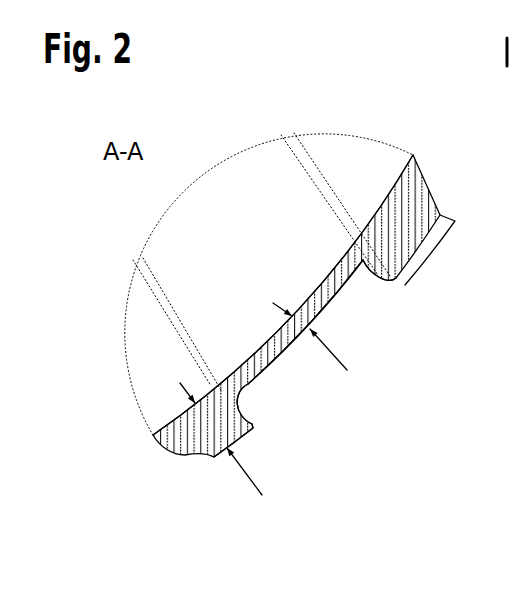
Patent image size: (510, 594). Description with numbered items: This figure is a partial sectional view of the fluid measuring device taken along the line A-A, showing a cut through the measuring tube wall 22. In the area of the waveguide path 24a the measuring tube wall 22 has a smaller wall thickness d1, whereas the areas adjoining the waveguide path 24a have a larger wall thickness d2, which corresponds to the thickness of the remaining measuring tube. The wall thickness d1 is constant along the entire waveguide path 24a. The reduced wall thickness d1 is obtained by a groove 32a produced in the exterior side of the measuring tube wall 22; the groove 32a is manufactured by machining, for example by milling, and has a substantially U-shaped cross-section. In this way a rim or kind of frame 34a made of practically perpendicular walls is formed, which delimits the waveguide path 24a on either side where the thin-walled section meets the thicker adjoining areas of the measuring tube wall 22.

The measuring tube wall 22 is at (400, 213).
The groove 32a is at (290, 345).
The waveguide path 24a is at (347, 280).
The rim or frame 34a is at (393, 277).
The smaller wall thickness d1 is at (340, 361).
The larger wall thickness d2 is at (258, 487).